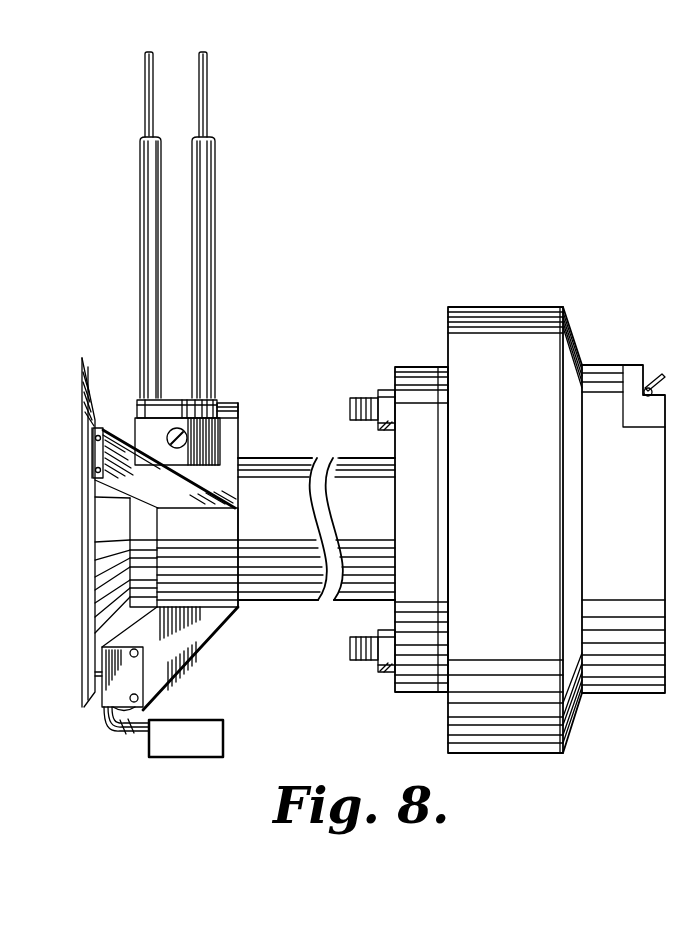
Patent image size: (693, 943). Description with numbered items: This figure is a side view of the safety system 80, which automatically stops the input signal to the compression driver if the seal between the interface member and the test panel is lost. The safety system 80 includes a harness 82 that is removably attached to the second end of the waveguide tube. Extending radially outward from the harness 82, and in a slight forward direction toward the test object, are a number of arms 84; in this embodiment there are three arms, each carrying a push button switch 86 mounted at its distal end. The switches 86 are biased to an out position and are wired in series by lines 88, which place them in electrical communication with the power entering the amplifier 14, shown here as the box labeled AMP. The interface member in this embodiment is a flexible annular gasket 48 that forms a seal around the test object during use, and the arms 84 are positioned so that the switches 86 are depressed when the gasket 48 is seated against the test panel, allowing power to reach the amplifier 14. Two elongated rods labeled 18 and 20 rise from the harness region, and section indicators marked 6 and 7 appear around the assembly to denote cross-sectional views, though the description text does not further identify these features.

The first sensor tube 18 is at (139, 226).
The second sensor tube 20 is at (215, 226).
The flexible annular gasket 48 is at (82, 490).
The harness 82 is at (225, 542).
The arms 84 is at (118, 437).
The push button switch 86 is at (93, 440).
The lines 88 is at (108, 730).
The amplifier 14 is at (223, 737).
The safety system 80 is at (243, 702).
The section line 6- 6 is at (90, 328).
The section line 7- 7 is at (243, 420).